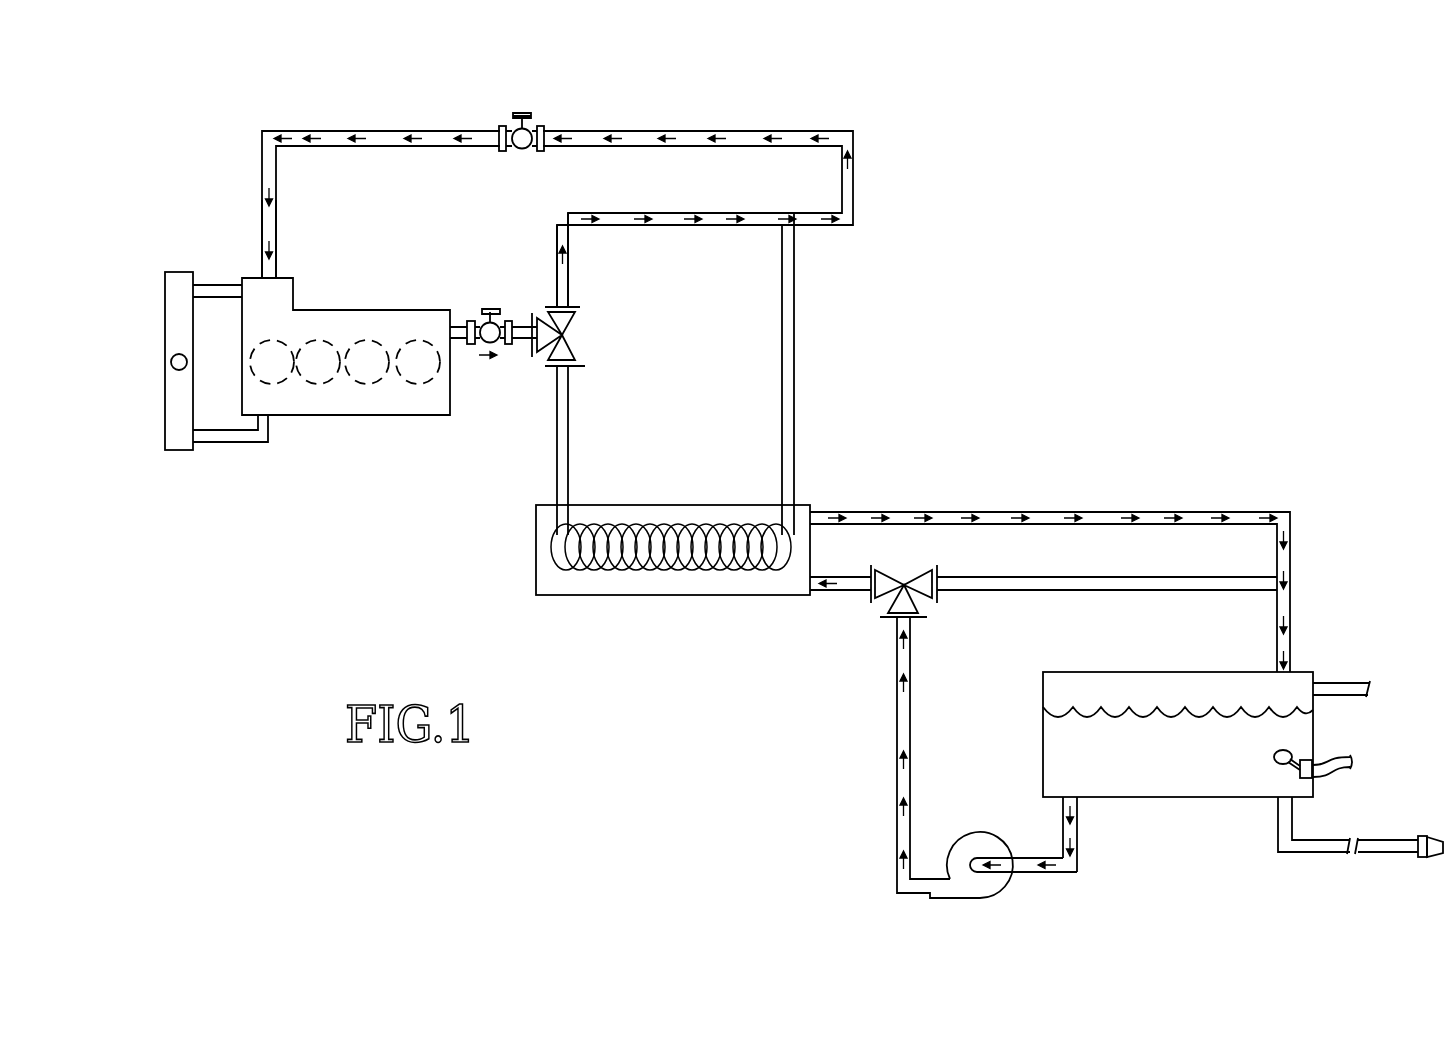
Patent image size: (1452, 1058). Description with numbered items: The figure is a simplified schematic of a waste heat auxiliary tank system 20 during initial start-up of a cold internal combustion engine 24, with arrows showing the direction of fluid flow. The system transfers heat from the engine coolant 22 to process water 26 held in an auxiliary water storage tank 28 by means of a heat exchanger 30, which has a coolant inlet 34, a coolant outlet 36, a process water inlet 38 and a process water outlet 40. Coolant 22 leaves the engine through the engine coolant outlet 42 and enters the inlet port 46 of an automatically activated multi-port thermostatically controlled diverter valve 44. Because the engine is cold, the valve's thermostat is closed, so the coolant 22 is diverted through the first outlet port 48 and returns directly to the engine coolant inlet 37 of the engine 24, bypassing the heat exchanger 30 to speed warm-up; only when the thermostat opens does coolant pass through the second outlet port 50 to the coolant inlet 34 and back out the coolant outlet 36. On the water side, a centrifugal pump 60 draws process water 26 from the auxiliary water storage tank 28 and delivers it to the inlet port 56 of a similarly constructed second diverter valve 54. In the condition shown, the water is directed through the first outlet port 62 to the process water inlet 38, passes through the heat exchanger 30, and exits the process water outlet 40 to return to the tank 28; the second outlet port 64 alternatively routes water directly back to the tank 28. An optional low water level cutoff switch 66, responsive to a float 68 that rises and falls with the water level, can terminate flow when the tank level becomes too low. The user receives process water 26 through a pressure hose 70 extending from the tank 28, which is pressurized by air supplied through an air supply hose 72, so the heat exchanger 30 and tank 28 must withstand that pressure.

The waste heat auxiliary tank system 20 is at (1093, 247).
The coolant 22 is at (722, 131).
The internal combustion engine 24 is at (358, 418).
The process water 26 is at (1168, 513).
The auxiliary water storage tank 28 is at (1203, 798).
The heat exchanger 30 is at (673, 595).
The coolant inlet 34 is at (550, 502).
The coolant outlet 36 is at (797, 500).
The engine coolant inlet 37 is at (257, 272).
The process water inlet 38 is at (815, 597).
The process water outlet 40 is at (827, 505).
The engine coolant outlet 42 is at (455, 320).
The multi-port thermostatically controlled diverter valve 44 is at (592, 320).
The inlet port 46 is at (532, 350).
The first outlet port 48 is at (547, 292).
The second outlet port 50 is at (583, 350).
The second diverter valve 54 is at (907, 572).
The inlet port 56 is at (925, 625).
The centrifugal pump 60 is at (1010, 890).
The first outlet port 62 is at (868, 607).
The second outlet port 64 is at (945, 595).
The low water level cutoff switch 66 is at (1327, 750).
The float 68 is at (1273, 757).
The pressure hose 70 is at (1335, 848).
The air supply hose 72 is at (1348, 683).